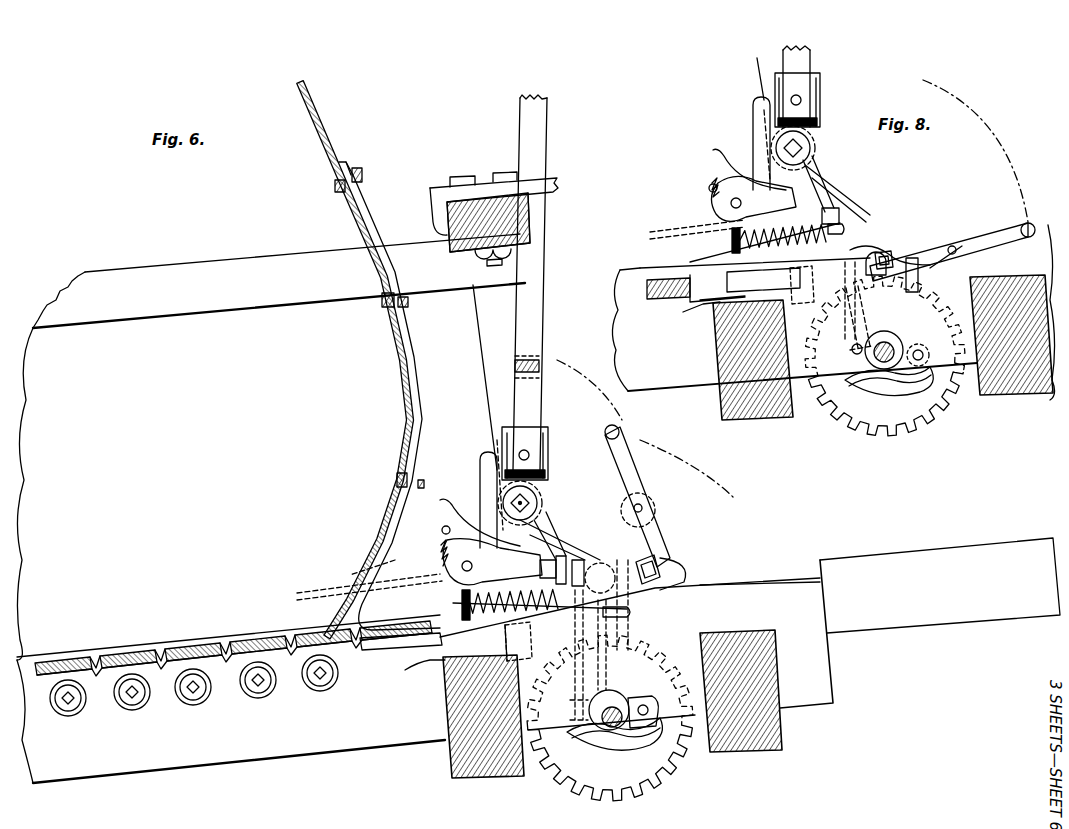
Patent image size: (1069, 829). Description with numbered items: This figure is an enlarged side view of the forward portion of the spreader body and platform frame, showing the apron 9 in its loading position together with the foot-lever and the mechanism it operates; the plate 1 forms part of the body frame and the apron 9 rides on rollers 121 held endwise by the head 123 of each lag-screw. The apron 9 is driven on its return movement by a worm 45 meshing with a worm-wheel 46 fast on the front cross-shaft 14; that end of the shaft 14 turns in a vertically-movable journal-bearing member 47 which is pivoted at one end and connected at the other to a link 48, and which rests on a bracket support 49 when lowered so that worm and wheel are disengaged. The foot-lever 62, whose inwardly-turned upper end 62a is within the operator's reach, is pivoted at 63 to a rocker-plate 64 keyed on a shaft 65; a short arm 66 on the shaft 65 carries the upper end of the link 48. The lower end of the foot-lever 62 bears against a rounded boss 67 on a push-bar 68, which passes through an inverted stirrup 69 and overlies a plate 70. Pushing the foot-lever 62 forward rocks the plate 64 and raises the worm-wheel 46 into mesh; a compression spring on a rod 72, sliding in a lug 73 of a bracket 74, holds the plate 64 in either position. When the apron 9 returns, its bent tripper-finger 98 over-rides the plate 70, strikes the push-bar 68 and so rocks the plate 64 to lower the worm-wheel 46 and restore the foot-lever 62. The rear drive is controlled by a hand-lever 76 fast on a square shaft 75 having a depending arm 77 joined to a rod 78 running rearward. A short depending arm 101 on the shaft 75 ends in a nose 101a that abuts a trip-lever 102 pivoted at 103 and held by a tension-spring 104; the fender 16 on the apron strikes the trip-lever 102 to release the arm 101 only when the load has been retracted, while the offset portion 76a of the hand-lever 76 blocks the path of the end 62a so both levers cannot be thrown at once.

In FIG. 6, the plate 1 is at (271, 447).
In FIG. 6, the apron 9 is at (195, 655).
In FIG. 6, the front cross-shaft 14 is at (645, 704).
In FIG. 8, the front cross-shaft 14 is at (880, 370).
In FIG. 6, the fender 16 is at (405, 378).
In FIG. 6, the worm 45 is at (640, 610).
In FIG. 8, the worm 45 is at (912, 258).
In FIG. 6, the worm-wheel 46 is at (655, 650).
In FIG. 8, the worm-wheel 46 is at (948, 290).
In FIG. 6, the journal-bearing member 47 is at (618, 703).
In FIG. 8, the journal-bearing member 47 is at (897, 343).
In FIG. 6, the link 48 is at (584, 665).
In FIG. 8, the link 48 is at (852, 326).
In FIG. 6, the bracket support 49 is at (625, 745).
In FIG. 8, the bracket support 49 is at (896, 388).
In FIG. 6, the foot-lever 62 is at (628, 470).
In FIG. 8, the foot-lever 62 is at (995, 232).
In FIG. 6, the inwardly-turned upper end 62a is at (619, 432).
In FIG. 8, the inwardly-turned upper end 62a is at (1030, 223).
In FIG. 6, the pivot 63 is at (642, 507).
In FIG. 8, the pivot 63 is at (954, 246).
In FIG. 6, the rocker-plate 64 is at (628, 512).
In FIG. 8, the rocker-plate 64 is at (945, 230).
In FIG. 6, the shaft 65 is at (580, 560).
In FIG. 6, the short arm 66 is at (567, 554).
In FIG. 8, the short arm 66 is at (878, 252).
In FIG. 6, the rounded boss 67 is at (660, 572).
In FIG. 8, the rounded boss 67 is at (884, 260).
In FIG. 6, the push-bar 68 is at (672, 596).
In FIG. 8, the push-bar 68 is at (794, 324).
In FIG. 6, the inverted stirrup 69 is at (512, 630).
In FIG. 8, the inverted stirrup 69 is at (796, 280).
In FIG. 6, the plate 70 is at (415, 672).
In FIG. 8, the plate 70 is at (705, 308).
In FIG. 6, the rod 72 is at (455, 604).
In FIG. 8, the rod 72 is at (700, 262).
In FIG. 6, the lug 73 is at (462, 615).
In FIG. 6, the bracket 74 is at (480, 465).
In FIG. 8, the bracket 74 is at (768, 205).
In FIG. 6, the square shaft 75 is at (532, 498).
In FIG. 8, the square shaft 75 is at (808, 152).
In FIG. 6, the hand-lever 76 is at (545, 160).
In FIG. 8, the hand-lever 76 is at (812, 60).
In FIG. 6, the laterally-offset portion 76a is at (542, 364).
In FIG. 6, the depending arm 77 is at (550, 545).
In FIG. 8, the depending arm 77 is at (830, 190).
In FIG. 6, the rod 78 is at (369, 574).
In FIG. 8, the rod 78 is at (815, 210).
In FIG. 6, the tripper-finger 98 is at (420, 650).
In FIG. 8, the tripper-finger 98 is at (696, 288).
In FIG. 6, the depending arm 101 is at (540, 528).
In FIG. 8, the depending arm 101 is at (845, 165).
In FIG. 6, the nose 101a is at (555, 540).
In FIG. 8, the nose 101a is at (855, 178).
In FIG. 6, the trip-lever 102 is at (490, 528).
In FIG. 8, the trip-lever 102 is at (761, 171).
In FIG. 6, the pivot 103 is at (492, 562).
In FIG. 8, the pivot 103 is at (753, 198).
In FIG. 6, the tension-spring 104 is at (448, 548).
In FIG. 8, the tension-spring 104 is at (712, 190).
In FIG. 6, the roller 121 is at (258, 698).
In FIG. 6, the head 123 is at (320, 690).